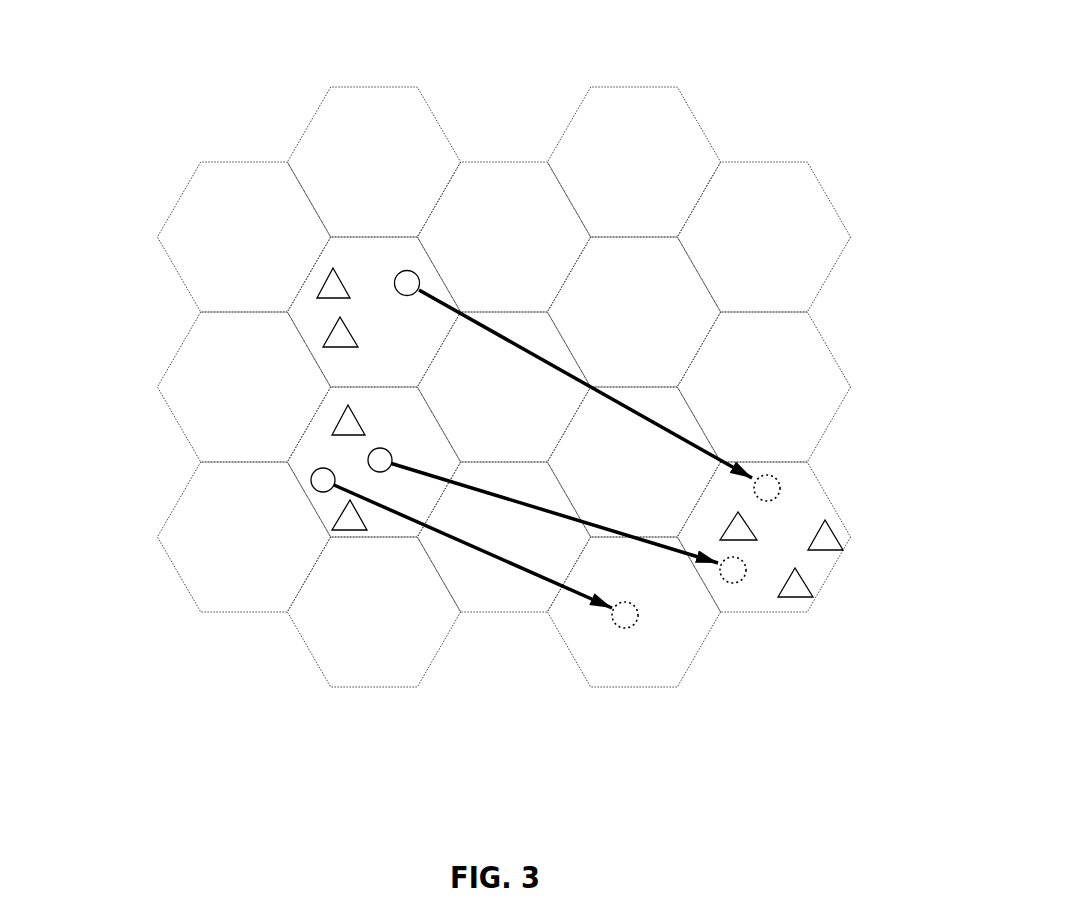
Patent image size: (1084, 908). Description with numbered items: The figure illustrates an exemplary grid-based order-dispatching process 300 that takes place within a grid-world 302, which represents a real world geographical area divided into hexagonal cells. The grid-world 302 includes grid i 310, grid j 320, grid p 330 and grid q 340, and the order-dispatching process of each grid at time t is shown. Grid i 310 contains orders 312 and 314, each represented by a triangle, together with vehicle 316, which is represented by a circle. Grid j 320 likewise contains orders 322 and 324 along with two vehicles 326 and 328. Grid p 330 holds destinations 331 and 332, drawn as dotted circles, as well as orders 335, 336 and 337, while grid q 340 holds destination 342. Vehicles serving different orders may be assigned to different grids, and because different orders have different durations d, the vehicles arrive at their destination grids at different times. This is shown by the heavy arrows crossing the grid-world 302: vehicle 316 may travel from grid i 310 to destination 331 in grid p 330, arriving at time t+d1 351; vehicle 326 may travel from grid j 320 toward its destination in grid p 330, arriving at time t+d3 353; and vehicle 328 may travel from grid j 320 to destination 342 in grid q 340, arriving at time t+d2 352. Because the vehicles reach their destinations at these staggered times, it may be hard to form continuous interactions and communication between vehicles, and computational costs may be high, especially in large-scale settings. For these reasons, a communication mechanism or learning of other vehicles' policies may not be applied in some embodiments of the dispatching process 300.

The grid-based order-dispatching process 300 is at (622, 44).
The grid-world 302 is at (398, 81).
The grid i 310 is at (352, 248).
The order 312 is at (317, 285).
The order 314 is at (323, 332).
The vehicle 316 is at (418, 268).
The grid j 320 is at (373, 402).
The order 322 is at (332, 420).
The order 324 is at (335, 525).
The vehicle 326 is at (365, 455).
The vehicle 328 is at (305, 477).
The grid p 330 is at (790, 466).
The destination 331 is at (785, 482).
The destination 332 is at (740, 588).
The order 335 is at (842, 533).
The order 336 is at (765, 540).
The order 337 is at (812, 597).
The grid q 340 is at (608, 665).
The destination 342 is at (640, 627).
The time t+d1 351 is at (585, 384).
The time t+d2 352 is at (473, 546).
The time t+d3 353 is at (555, 514).